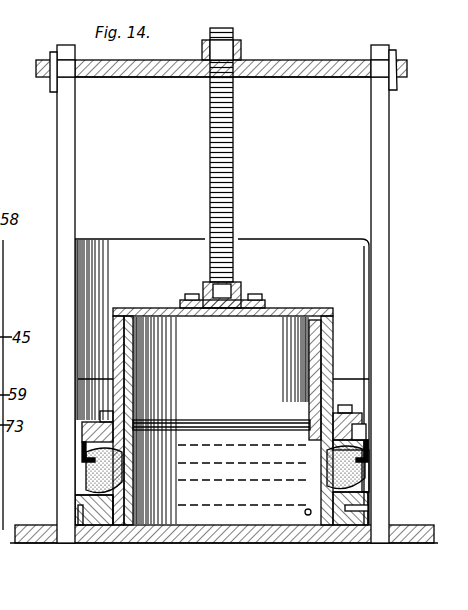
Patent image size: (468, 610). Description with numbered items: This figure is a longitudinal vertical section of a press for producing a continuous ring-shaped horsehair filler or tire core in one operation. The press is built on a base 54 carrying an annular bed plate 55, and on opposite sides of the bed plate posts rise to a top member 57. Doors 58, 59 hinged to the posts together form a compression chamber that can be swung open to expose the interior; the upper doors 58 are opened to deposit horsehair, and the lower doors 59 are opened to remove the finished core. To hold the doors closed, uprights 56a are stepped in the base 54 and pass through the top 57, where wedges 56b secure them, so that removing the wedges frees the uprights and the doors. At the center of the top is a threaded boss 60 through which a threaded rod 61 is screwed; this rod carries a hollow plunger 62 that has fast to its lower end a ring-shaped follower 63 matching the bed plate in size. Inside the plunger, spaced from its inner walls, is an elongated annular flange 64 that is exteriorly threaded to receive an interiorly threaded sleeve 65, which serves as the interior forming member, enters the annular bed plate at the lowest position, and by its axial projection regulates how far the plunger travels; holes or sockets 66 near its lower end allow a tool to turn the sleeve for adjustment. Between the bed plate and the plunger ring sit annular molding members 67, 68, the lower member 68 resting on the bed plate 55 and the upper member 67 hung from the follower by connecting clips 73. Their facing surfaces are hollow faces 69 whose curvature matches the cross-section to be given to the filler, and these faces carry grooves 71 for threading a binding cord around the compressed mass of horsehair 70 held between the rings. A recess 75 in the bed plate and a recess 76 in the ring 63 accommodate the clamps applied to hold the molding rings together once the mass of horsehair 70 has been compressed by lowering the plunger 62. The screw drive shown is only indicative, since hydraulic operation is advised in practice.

The base 54 is at (176, 545).
The bed plate 55 is at (108, 517).
The uprights 56a is at (66, 165).
The wedges 56b is at (406, 26).
The top member 57 is at (136, 78).
The doors 58 is at (78, 277).
The doors 59 is at (78, 508).
The threaded boss 60 is at (243, 52).
The threaded rod 61 is at (234, 152).
The hollow plunger 62 is at (287, 309).
The follower 63 is at (354, 417).
The annular flange 64 is at (314, 352).
The sleeve 65 is at (323, 361).
The holes or sockets 66 is at (305, 513).
The molding member 67 is at (370, 447).
The molding member 68 is at (369, 496).
The hollow faces 69 is at (321, 443).
The mass of horsehair 70 is at (92, 473).
The grooves 71 is at (86, 453).
The connecting clips 73 is at (82, 434).
The recess 75 is at (356, 512).
The recess 76 is at (367, 433).